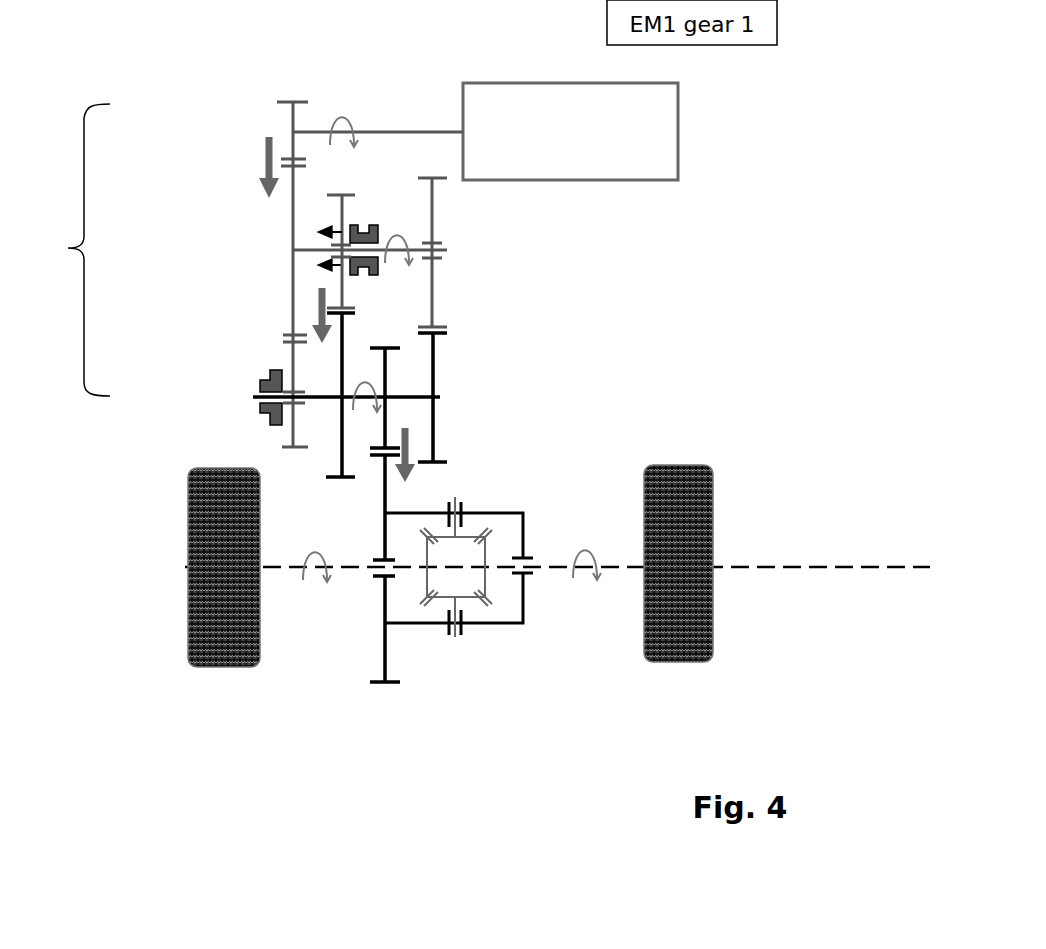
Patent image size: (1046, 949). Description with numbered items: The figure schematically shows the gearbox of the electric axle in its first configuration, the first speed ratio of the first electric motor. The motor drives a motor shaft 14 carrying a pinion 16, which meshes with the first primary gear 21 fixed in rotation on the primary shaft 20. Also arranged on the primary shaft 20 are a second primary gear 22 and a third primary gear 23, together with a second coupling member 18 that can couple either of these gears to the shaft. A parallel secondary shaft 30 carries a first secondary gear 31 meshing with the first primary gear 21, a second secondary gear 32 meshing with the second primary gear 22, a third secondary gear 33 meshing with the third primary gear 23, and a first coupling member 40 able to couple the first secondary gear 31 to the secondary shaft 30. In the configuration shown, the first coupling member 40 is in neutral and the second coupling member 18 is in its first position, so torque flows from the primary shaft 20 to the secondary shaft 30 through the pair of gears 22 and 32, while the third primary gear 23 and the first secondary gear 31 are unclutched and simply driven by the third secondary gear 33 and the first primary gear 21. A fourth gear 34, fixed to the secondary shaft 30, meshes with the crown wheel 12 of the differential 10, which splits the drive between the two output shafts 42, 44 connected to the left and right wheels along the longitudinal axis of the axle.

The differential 10 is at (478, 675).
The crown wheel 12 is at (383, 662).
The motor shaft 14 is at (375, 134).
The pinion 16 is at (293, 114).
The second coupling member 18 is at (376, 224).
The primary shaft 20 is at (452, 250).
The first primary gear 21 is at (293, 275).
The second primary gear 22 is at (340, 218).
The third primary gear 23 is at (433, 200).
The secondary shaft 30 is at (253, 387).
The first secondary gear 31 is at (293, 351).
The second secondary gear 32 is at (342, 327).
The third secondary gear 33 is at (435, 455).
The fourth gear 34 is at (385, 363).
The first coupling member 40 is at (268, 408).
The output shaft 42 is at (283, 568).
The output shaft 44 is at (552, 567).